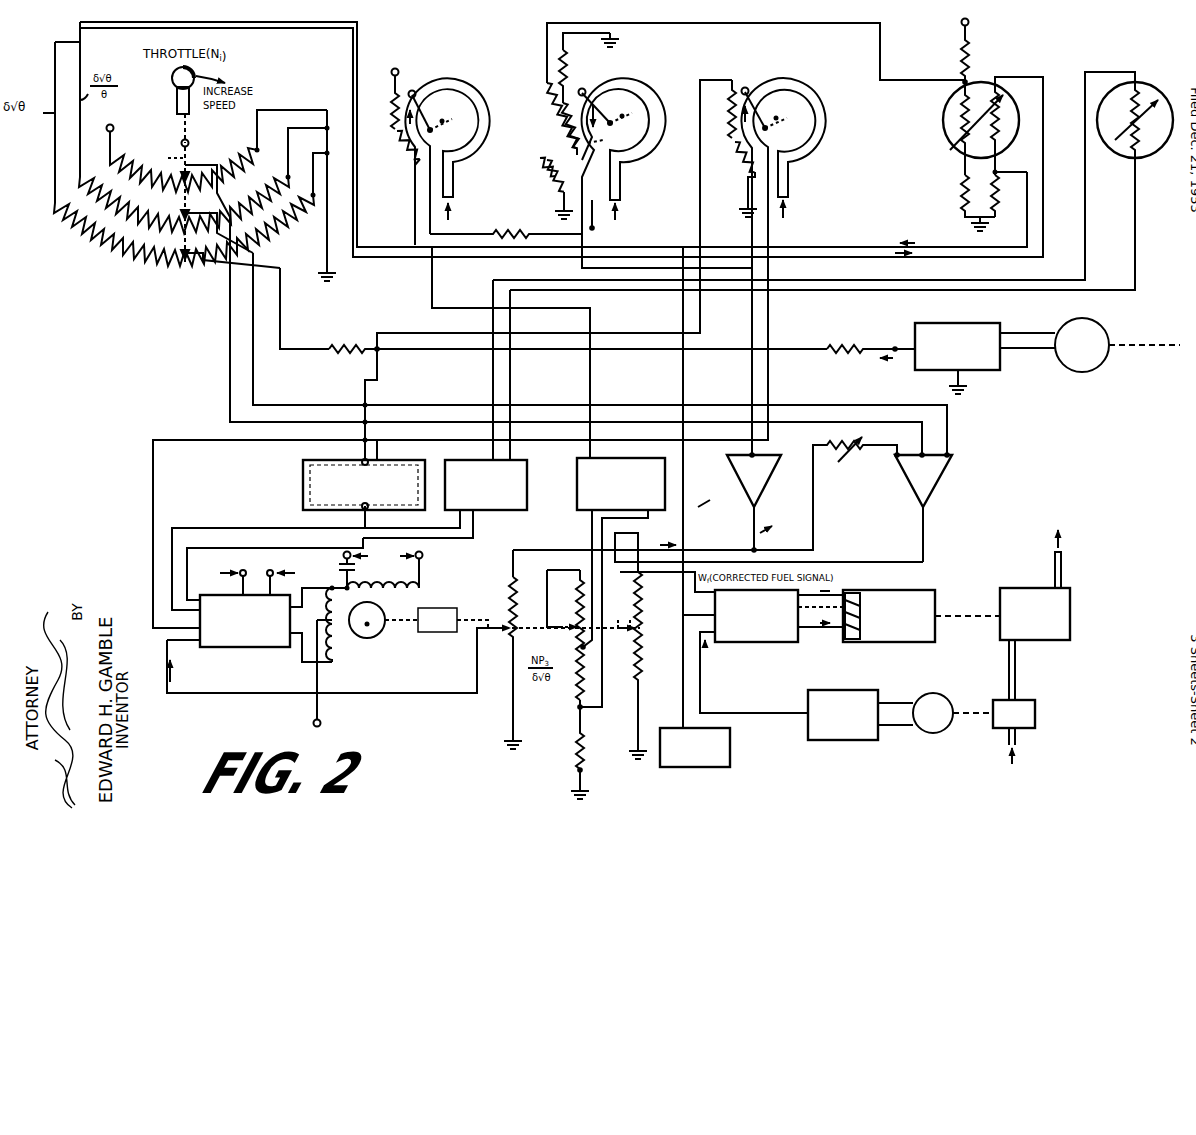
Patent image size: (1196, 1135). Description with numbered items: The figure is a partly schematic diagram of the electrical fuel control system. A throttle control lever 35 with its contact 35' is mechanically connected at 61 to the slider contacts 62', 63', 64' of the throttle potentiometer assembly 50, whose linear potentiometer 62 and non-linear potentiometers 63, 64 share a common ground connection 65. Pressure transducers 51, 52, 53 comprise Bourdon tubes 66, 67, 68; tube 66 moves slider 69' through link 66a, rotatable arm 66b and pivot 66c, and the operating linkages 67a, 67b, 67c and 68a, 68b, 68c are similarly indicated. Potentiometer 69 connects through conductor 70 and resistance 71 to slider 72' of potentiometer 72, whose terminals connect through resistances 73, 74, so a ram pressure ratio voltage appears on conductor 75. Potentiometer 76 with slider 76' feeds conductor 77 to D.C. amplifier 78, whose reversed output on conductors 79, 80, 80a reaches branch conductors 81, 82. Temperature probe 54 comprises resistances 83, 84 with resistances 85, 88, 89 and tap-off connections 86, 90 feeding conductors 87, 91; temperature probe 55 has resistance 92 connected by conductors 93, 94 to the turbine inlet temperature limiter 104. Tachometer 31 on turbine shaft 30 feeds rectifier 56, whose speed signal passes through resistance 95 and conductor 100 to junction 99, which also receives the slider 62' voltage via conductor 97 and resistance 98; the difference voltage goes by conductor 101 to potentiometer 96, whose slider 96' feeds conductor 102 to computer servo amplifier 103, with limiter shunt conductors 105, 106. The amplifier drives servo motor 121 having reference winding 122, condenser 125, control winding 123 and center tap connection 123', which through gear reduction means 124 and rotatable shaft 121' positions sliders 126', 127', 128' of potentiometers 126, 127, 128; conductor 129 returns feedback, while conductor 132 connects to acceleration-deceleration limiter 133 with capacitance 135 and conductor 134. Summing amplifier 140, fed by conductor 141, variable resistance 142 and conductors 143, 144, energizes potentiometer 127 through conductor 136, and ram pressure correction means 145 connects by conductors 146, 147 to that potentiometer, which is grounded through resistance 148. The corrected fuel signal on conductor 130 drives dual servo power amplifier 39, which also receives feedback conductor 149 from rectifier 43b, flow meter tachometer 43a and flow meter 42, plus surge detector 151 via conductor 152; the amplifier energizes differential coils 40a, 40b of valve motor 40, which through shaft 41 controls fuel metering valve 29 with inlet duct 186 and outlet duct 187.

The metering valve 29 is at (1070, 612).
The turbine shaft 30 is at (1117, 355).
The tachometer generator 31 is at (1109, 338).
The throttle lever 35 is at (167, 105).
The throttle lever contact 35' is at (168, 135).
The dual servo 39 is at (781, 643).
The valve motor 40 is at (917, 590).
The valve motor gearing 40a is at (860, 640).
The valve motor connection 40b is at (820, 606).
The shaft 41 is at (980, 614).
The fuel pump 42 is at (1036, 712).
The tachometer 43a is at (934, 693).
The rectifier 43b is at (843, 741).
The throttle potentiometer assembly 50 is at (206, 134).
The P0 pressure responsive device 51 is at (444, 75).
The P2 pressure responsive device 52 is at (612, 76).
The P3 pressure responsive device 53 is at (788, 76).
The T2 temperature responsive device 54 is at (950, 153).
The T4 temperature responsive device 55 is at (1147, 82).
The rectifier 56 is at (957, 323).
The contact arm 61 is at (165, 157).
The potentiometer 62 is at (205, 160).
The wiper 62' is at (192, 188).
The potentiometer 63 is at (203, 188).
The wiper 63' is at (201, 227).
The potentiometer 64 is at (190, 220).
The wiper 64' is at (214, 254).
The ground connection 65 is at (325, 248).
The contact assembly 66 is at (461, 153).
The fixed contact 66a is at (430, 98).
The movable contact 66b is at (449, 123).
The contact 66c is at (446, 118).
The contact assembly 67 is at (648, 148).
The fixed contact 67a is at (600, 101).
The movable contact 67b is at (626, 122).
The contact 67c is at (624, 116).
The contact assembly 68 is at (810, 140).
The fixed contact 68a is at (752, 97).
The movable contact 68b is at (777, 126).
The contact 68c is at (780, 118).
The resistor 69 is at (390, 149).
The resistor 69' is at (379, 102).
The conductor 70 is at (414, 194).
The resistor 71 is at (503, 232).
The resistor 72 is at (540, 118).
The contact 72' is at (608, 146).
The conductor 73 is at (580, 222).
The resistor 74 is at (568, 67).
The conductor 75 is at (431, 292).
The resistor 76 is at (530, 161).
The resistor 76' is at (540, 188).
The conductor 77 is at (580, 268).
The DC amplifier 78 is at (775, 488).
The conductor 79 is at (513, 567).
The conductor 80 is at (685, 459).
The conductor 80a is at (690, 240).
The conductor 81 is at (300, 29).
The conductor 82 is at (839, 258).
The resistor 83 is at (1000, 125).
The resistor 84 is at (960, 99).
The resistor 85 is at (999, 191).
The junction 86 is at (995, 170).
The conductor 87 is at (361, 23).
The resistor 88 is at (969, 56).
The resistor 89 is at (961, 191).
The junction 90 is at (963, 82).
The conductor 91 is at (546, 48).
The resistor 92 is at (1127, 149).
The conductor 93 is at (493, 289).
The conductor 94 is at (511, 359).
The resistor 95 is at (850, 348).
The resistor 96 is at (720, 125).
The resistor 96' is at (763, 177).
The conductor 97 is at (283, 314).
The resistor 98 is at (345, 346).
The junction 99 is at (380, 350).
The conductor 100 is at (460, 350).
The conductor 101 is at (399, 330).
The conductor 102 is at (767, 226).
The computer servo amplifier 103 is at (246, 648).
The T4 limiter 104 is at (495, 511).
The conductor 105 is at (250, 528).
The conductor 106 is at (195, 570).
The motor shaft 121 is at (384, 617).
The wiper drive shaft 121' is at (548, 610).
The motor winding 122 is at (420, 590).
The motor winding 123 is at (349, 658).
The winding taps 123' is at (293, 626).
The reduction gear 124 is at (448, 632).
The capacitor 125 is at (340, 566).
The potentiometer 126 is at (492, 663).
The wiper 126' is at (494, 644).
The potentiometer 127 is at (555, 639).
The wiper 127' is at (566, 598).
The potentiometer 128 is at (656, 665).
The wiper 128' is at (621, 643).
The feedback conductor 129 is at (258, 694).
The conductor 130 is at (688, 570).
The conductor 132 is at (363, 519).
The conductor 133 is at (390, 458).
The conductor 134 is at (363, 383).
The acceleration deceleration limiter 135 is at (303, 470).
The conductor 136 is at (890, 562).
The DC amplifier 140 is at (952, 489).
The potentiometer 141 is at (831, 445).
The wiper 142 is at (854, 455).
The conductor 143 is at (228, 325).
The conductor 144 is at (253, 343).
The ram pressure correction unit 145 is at (612, 458).
The conductor 146 is at (590, 518).
The conductor 147 is at (650, 512).
The resistor 148 is at (577, 753).
The conductor 149 is at (702, 680).
The surge detector 151 is at (732, 746).
The conductor 152 is at (683, 691).
The fuel conduit 186 is at (1016, 669).
The fuel conduit 187 is at (1062, 571).